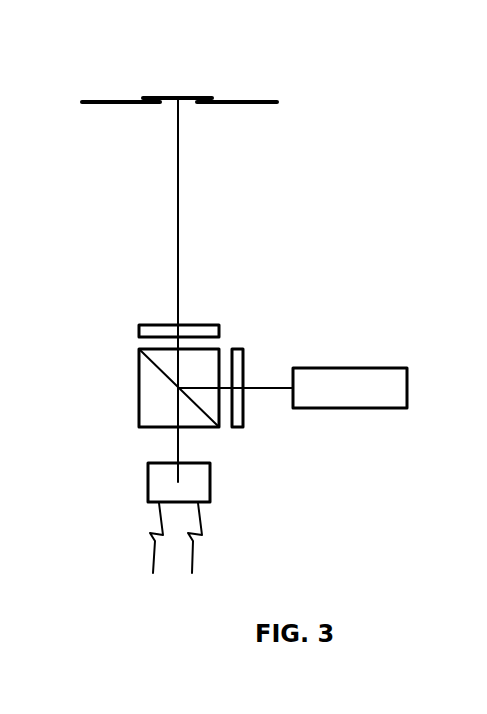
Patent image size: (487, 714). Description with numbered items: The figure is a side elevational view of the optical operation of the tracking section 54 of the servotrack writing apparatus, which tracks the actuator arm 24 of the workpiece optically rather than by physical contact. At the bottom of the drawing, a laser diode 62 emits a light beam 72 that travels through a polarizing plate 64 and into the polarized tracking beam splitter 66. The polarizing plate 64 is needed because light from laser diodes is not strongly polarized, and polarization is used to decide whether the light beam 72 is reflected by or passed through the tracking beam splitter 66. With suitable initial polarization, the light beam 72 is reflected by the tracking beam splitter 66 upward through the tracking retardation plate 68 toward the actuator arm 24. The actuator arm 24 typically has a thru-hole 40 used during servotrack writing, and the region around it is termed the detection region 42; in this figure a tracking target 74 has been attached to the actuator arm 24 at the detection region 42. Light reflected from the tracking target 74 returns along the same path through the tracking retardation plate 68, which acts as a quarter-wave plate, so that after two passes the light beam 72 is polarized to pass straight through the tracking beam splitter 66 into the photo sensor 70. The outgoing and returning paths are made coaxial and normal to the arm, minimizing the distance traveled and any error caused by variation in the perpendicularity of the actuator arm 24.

The actuator arm 24 is at (247, 103).
The thru-hole 40 is at (185, 103).
The detection region 42 is at (125, 103).
The tracking section 54 is at (268, 255).
The laser diode 62 is at (352, 408).
The polarizing plate 64 is at (238, 427).
The polarized tracking beam splitter 66 is at (139, 412).
The tracking retardation plate 68 is at (140, 328).
The photo sensor 70 is at (210, 485).
The light beam 72 is at (177, 287).
The tracking target 74 is at (165, 96).